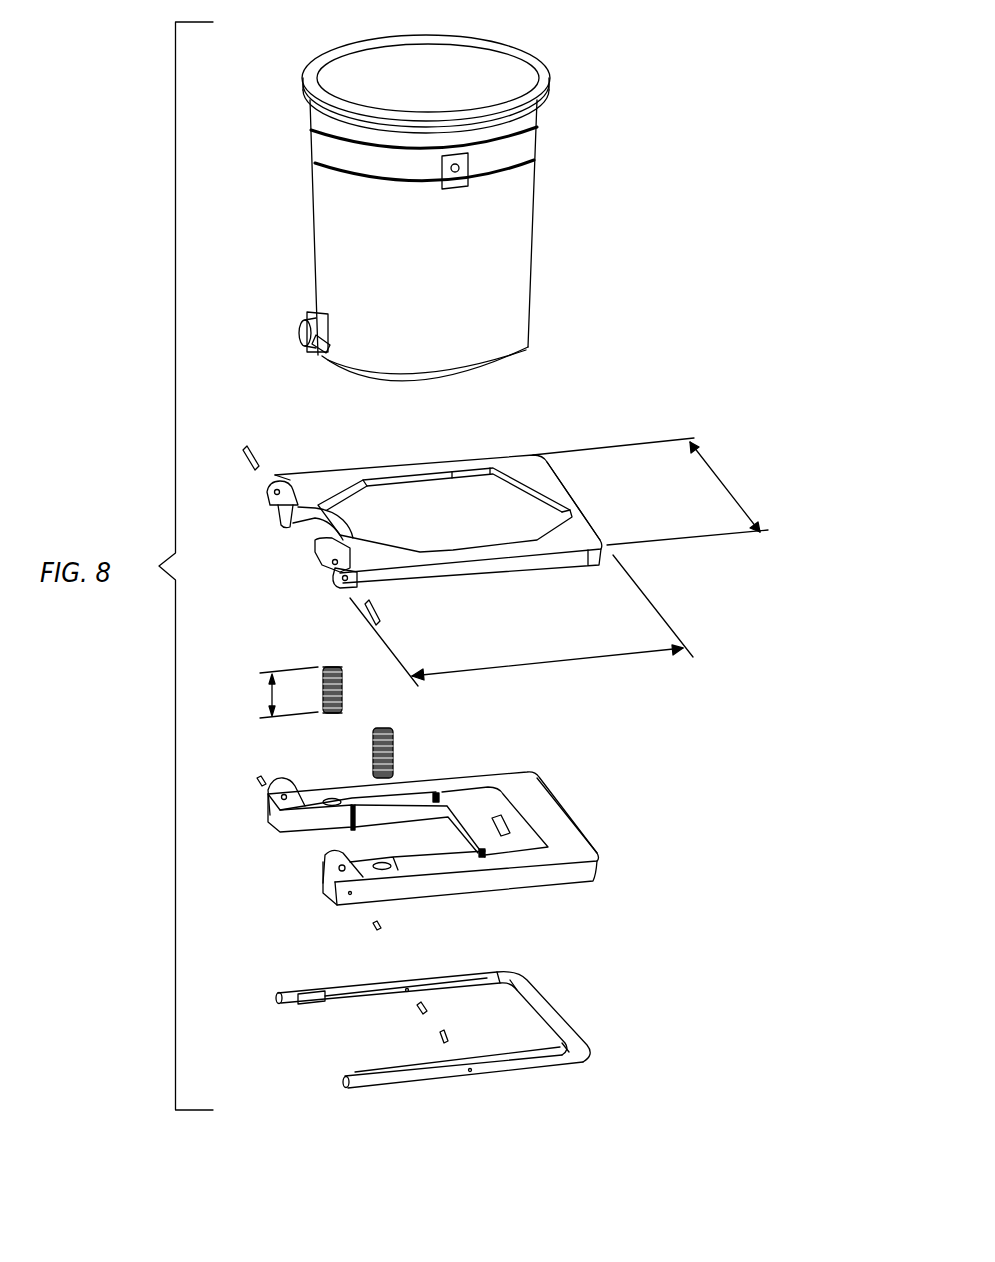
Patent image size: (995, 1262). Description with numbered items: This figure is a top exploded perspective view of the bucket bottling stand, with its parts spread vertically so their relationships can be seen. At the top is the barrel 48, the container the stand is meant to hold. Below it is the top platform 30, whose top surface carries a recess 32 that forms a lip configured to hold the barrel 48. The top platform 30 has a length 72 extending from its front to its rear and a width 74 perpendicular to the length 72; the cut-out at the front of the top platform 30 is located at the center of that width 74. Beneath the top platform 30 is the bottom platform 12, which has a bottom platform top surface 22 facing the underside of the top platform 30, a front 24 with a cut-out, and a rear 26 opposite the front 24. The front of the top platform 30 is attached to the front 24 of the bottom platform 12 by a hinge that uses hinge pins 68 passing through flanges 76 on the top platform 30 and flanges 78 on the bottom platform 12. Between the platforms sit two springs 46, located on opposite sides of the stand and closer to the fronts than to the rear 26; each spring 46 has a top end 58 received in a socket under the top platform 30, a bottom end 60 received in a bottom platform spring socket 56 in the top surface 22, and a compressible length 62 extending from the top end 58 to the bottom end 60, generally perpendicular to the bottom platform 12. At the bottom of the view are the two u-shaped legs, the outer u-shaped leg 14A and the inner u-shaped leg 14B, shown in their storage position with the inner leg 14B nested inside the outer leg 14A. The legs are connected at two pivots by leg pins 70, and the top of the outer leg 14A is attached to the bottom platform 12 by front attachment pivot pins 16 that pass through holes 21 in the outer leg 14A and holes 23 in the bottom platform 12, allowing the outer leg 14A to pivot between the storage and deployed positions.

The bottom platform 12 is at (553, 748).
The outer u-shaped leg 14A is at (434, 1030).
The inner u-shaped leg 14B is at (550, 1033).
The front attachment pivot pins 16 is at (258, 782).
The holes in the outer u-shaped leg 21 is at (282, 1005).
The bottom platform top surface 22 is at (405, 845).
The holes in the bottom platform 23 is at (350, 895).
The front of the bottom platform 24 is at (287, 535).
The rear of the bottom platform 26 is at (587, 518).
The top platform 30 is at (460, 624).
The recess 32 is at (537, 500).
The spring 46 is at (342, 700).
The barrel 48 is at (523, 218).
The bottom platform spring socket 56 is at (333, 798).
The top end of the spring 58 is at (332, 666).
The bottom end of the spring 60 is at (335, 716).
The compressible length of the spring 62 is at (268, 697).
The hinge pins 68 is at (258, 455).
The leg pins 70 is at (415, 1007).
The length of the top platform 72 is at (632, 653).
The width of the top platform 74 is at (720, 473).
The flanges on the top platform 76 is at (280, 503).
The flanges on the bottom platform 78 is at (268, 788).